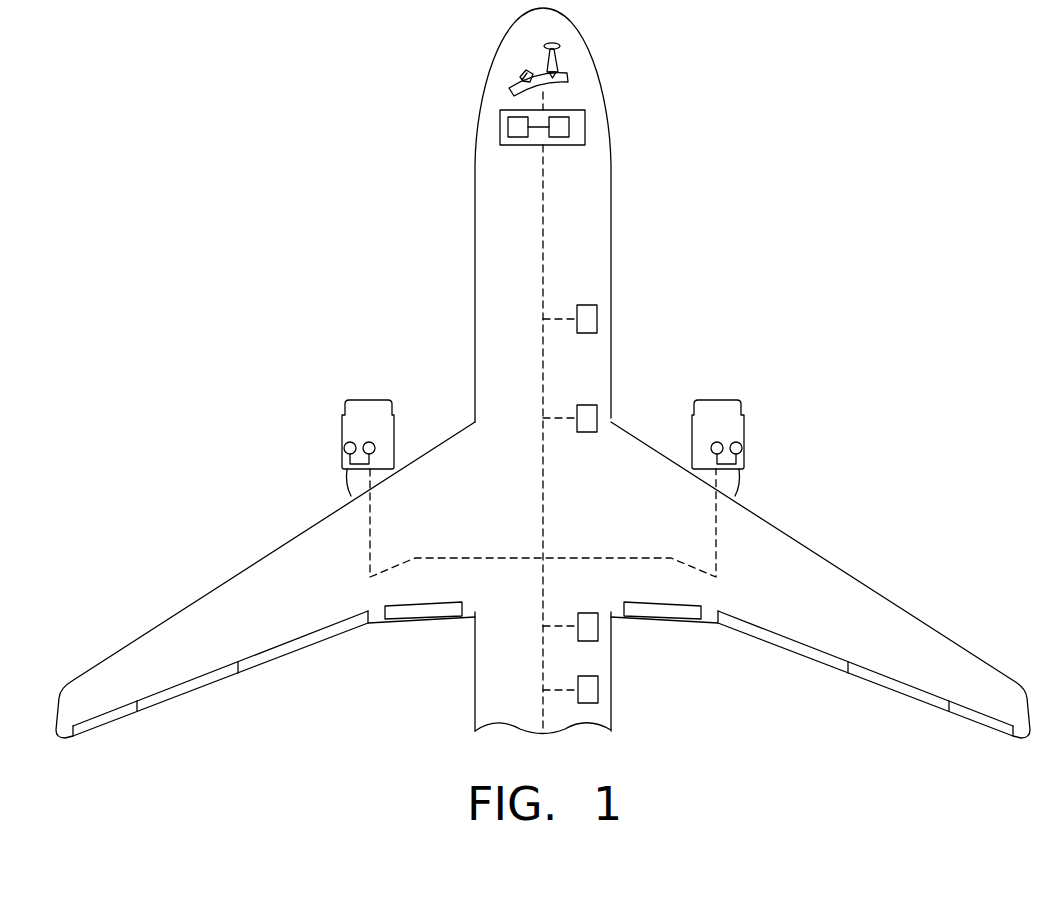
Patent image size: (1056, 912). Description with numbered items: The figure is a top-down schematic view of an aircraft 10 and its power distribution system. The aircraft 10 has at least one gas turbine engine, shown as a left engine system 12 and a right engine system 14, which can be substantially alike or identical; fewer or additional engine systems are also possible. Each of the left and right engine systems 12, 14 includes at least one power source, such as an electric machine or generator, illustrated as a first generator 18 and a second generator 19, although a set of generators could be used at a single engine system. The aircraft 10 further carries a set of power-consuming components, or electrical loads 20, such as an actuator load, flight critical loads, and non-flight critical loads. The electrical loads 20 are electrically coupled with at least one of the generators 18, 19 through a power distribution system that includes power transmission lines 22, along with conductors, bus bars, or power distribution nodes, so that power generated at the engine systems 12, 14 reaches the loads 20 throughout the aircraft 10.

The aircraft 10 is at (279, 203).
The left engine system 12 is at (368, 410).
The right engine system 14 is at (724, 406).
The first generator 18 is at (396, 445).
The second generator 19 is at (345, 450).
The electrical loads 20 is at (518, 145).
The power transmission lines 22 is at (543, 257).